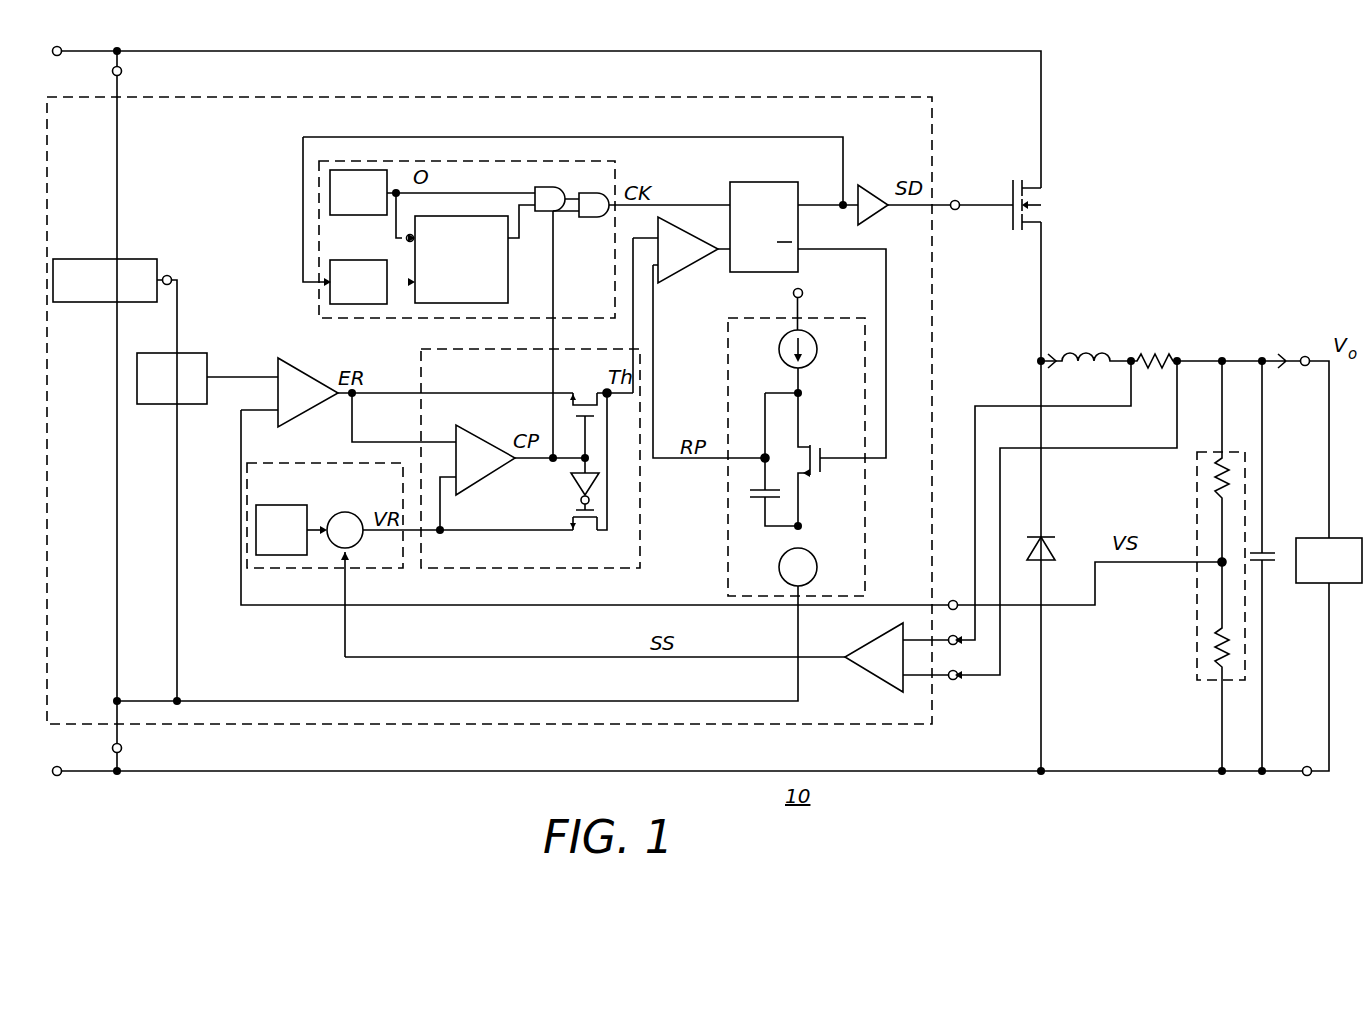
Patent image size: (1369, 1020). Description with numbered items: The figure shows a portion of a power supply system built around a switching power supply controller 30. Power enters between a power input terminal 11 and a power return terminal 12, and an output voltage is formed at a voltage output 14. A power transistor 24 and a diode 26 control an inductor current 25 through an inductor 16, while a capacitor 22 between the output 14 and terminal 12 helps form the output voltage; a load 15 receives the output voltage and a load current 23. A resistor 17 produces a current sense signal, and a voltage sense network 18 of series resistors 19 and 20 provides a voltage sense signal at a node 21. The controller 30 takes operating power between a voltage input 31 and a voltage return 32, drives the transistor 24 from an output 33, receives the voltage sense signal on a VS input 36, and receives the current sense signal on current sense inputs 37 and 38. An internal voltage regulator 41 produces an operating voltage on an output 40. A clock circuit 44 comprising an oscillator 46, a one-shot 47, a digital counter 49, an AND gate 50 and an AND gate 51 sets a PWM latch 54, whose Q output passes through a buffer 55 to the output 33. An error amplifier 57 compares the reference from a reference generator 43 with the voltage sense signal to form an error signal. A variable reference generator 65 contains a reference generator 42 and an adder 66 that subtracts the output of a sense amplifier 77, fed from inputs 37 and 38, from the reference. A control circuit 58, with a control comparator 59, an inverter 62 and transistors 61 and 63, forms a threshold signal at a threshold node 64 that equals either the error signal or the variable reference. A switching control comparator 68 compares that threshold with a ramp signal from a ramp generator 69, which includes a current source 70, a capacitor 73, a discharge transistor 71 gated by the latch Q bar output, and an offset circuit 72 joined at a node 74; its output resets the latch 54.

The power input terminal 11 is at (60, 46).
The power return terminal 12 is at (60, 776).
The voltage output 14 is at (1308, 356).
The load 15 is at (1308, 584).
The inductor 16 is at (1090, 357).
The resistor 17 is at (1158, 357).
The voltage sense network 18 is at (1200, 683).
The resistor 19 is at (1215, 486).
The resistor 20 is at (1215, 641).
The node 21 is at (1217, 567).
The capacitor 22 is at (1272, 552).
The load current 23 is at (1285, 353).
The power transistor 24 is at (1043, 212).
The inductor current 25 is at (1060, 353).
The diode 26 is at (1057, 549).
The switching power supply controller 30 is at (828, 727).
The voltage input 31 is at (122, 73).
The voltage return 32 is at (122, 752).
The output 33 is at (956, 200).
The VS input 36 is at (950, 600).
The current sense input 37 is at (966, 647).
The current sense input 38 is at (964, 681).
The output 40 is at (171, 276).
The internal voltage regulator 41 is at (101, 303).
The reference generator 42 is at (256, 528).
The reference generator 43 is at (175, 405).
The clock circuit 44 is at (318, 298).
The oscillator 46 is at (352, 215).
The one-shot 47 is at (373, 261).
The digital counter 49 is at (508, 268).
The AND gate 50 is at (553, 212).
The AND gate 51 is at (598, 219).
The PWM latch 54 is at (771, 182).
The buffer 55 is at (868, 186).
The error amplifier 57 is at (278, 362).
The control circuit 58 is at (642, 552).
The control comparator 59 is at (486, 440).
The transistor 61 is at (590, 393).
The inverter 62 is at (572, 481).
The transistor 63 is at (575, 526).
The threshold node 64 is at (609, 398).
The variable reference generator 65 is at (256, 463).
The adder 66 is at (353, 512).
The switching control comparator 68 is at (683, 274).
The ramp generator 69 is at (728, 376).
The current source 70 is at (815, 359).
The transistor 71 is at (812, 445).
The offset circuit 72 is at (815, 556).
The capacitor 73 is at (760, 500).
The node 74 is at (763, 455).
The sense amplifier 77 is at (872, 642).